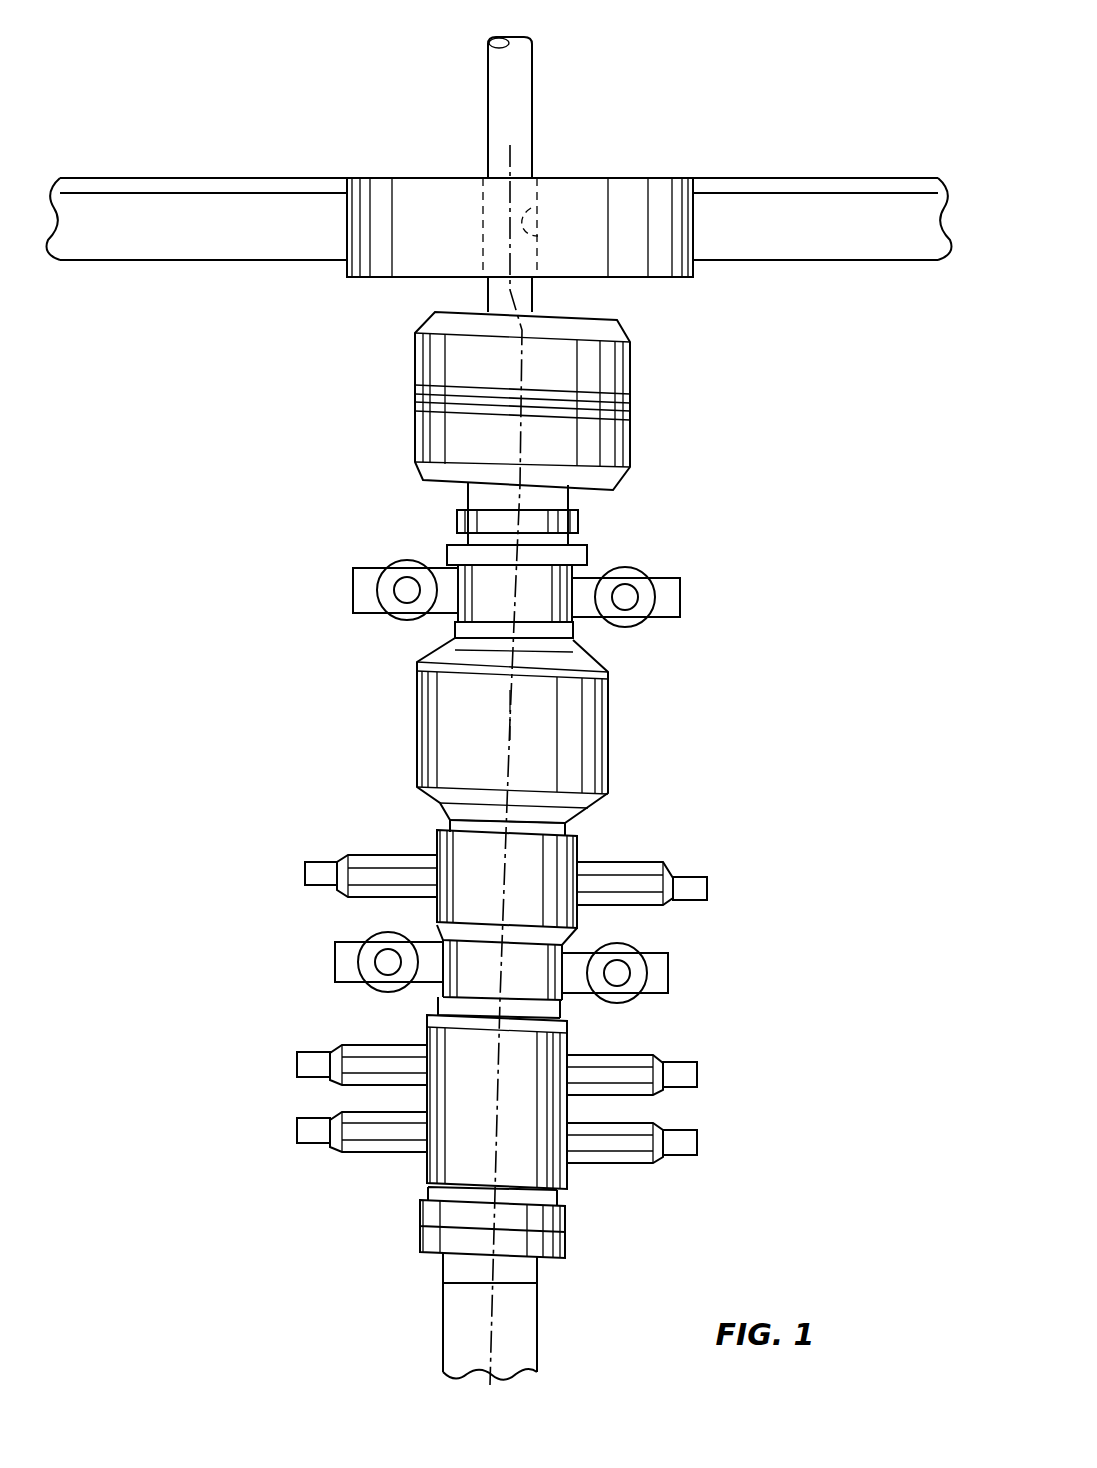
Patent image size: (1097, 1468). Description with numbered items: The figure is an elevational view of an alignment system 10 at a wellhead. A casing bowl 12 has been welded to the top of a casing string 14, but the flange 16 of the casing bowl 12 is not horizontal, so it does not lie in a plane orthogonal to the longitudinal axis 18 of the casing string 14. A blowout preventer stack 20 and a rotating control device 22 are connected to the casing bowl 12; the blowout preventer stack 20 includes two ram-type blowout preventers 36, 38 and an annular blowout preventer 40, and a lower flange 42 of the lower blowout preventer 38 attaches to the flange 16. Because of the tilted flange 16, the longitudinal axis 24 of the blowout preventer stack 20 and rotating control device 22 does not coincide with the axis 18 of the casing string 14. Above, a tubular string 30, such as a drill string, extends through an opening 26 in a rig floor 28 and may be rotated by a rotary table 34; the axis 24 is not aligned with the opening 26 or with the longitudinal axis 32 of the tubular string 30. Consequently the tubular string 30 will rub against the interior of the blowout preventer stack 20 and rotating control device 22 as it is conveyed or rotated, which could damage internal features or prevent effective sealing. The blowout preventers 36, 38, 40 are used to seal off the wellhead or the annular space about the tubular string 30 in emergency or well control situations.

The alignment system 10 is at (807, 97).
The casing bowl 12 is at (443, 1265).
The casing string 14 is at (540, 1305).
The flange 16 is at (567, 1244).
The longitudinal axis 18 is at (500, 1315).
The blowout preventer stack 20 is at (592, 845).
The rotating control device 22 is at (415, 432).
The longitudinal axis 24 is at (510, 716).
The opening 26 is at (544, 236).
The rig floor 28 is at (206, 178).
The tubular string 30 is at (534, 85).
The longitudinal axis 32 is at (488, 165).
The rotary table 34 is at (658, 178).
The ram-type blowout preventer 36 is at (360, 852).
The ram-type blowout preventer 38 is at (357, 1042).
The annular blowout preventer 40 is at (608, 728).
The lower flange 42 is at (418, 1212).